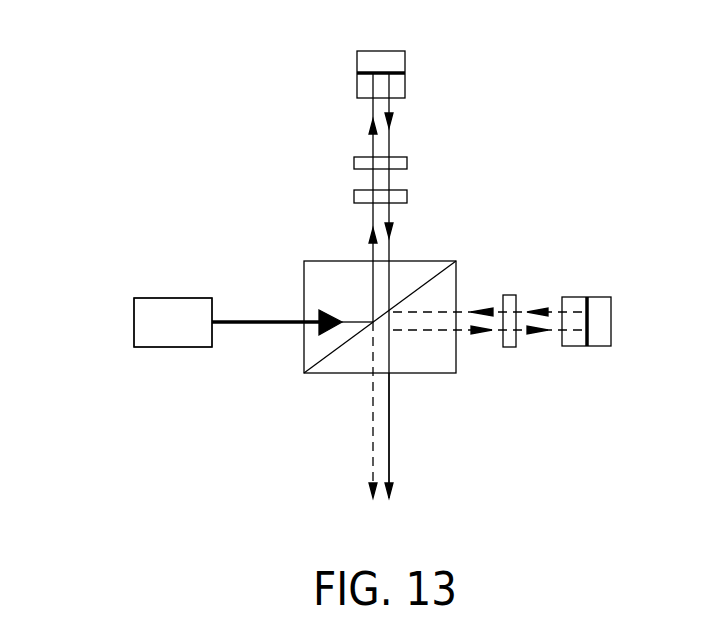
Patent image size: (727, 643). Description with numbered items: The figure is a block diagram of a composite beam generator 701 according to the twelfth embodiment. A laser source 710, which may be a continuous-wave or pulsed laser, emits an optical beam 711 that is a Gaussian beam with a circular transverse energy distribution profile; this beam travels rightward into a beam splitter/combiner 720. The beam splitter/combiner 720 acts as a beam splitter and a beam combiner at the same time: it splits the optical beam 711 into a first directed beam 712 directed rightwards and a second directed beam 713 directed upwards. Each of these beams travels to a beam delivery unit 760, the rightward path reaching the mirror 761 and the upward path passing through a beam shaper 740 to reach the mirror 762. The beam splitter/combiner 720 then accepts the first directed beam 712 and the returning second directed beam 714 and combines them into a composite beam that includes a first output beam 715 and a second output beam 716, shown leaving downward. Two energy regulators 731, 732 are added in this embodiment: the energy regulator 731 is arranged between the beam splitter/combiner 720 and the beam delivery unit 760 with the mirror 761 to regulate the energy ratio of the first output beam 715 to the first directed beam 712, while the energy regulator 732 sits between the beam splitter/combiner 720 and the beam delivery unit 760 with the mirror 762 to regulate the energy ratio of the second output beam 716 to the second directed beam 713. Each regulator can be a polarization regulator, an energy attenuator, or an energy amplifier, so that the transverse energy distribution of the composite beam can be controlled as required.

The composite beam generator 701 is at (97, 107).
The laser source 710 is at (172, 298).
The optical beam 711 is at (265, 323).
The first directed beam 712 is at (458, 330).
The second directed beam 713 is at (372, 220).
The second directed beam 714 is at (372, 152).
The first output beam 715 is at (372, 409).
The second output beam 716 is at (390, 405).
The beam splitter/combiner 720 is at (304, 290).
The energy regulator 731 is at (510, 302).
The energy regulator 732 is at (402, 196).
The beam shaper 740 is at (400, 163).
The beam delivery unit 760 is at (406, 63).
The mirror 761 is at (587, 302).
The mirror 762 is at (380, 73).